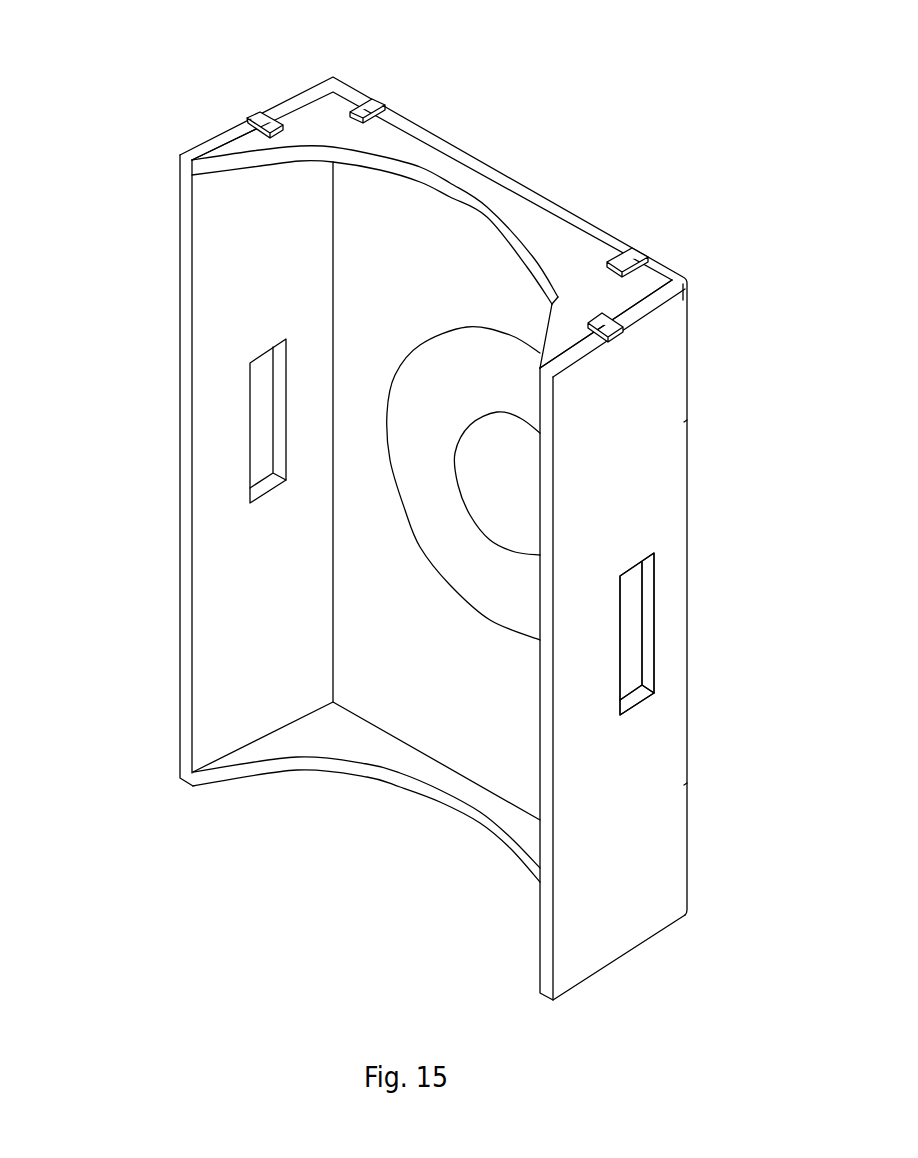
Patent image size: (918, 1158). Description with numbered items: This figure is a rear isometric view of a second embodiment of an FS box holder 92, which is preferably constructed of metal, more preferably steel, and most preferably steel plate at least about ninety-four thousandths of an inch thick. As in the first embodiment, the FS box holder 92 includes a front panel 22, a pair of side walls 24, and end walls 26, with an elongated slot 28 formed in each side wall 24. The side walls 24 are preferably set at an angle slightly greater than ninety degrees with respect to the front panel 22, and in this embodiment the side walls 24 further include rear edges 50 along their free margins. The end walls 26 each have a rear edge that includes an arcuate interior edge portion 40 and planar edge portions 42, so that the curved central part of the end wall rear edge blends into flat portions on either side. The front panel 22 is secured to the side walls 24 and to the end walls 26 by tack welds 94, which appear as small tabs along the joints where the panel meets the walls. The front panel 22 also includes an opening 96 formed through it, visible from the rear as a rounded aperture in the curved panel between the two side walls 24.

The FS box holder 92 is at (122, 120).
The front panel 22 is at (455, 740).
The side walls 24 is at (277, 254).
The end walls 26 is at (602, 297).
The elongated slots 28 is at (627, 627).
The arcuate interior edge portion 40 is at (460, 193).
The planar edge portions 42 is at (238, 162).
The rear edges 50 is at (186, 440).
The tack welds 94 is at (630, 255).
The opening 96 is at (503, 492).